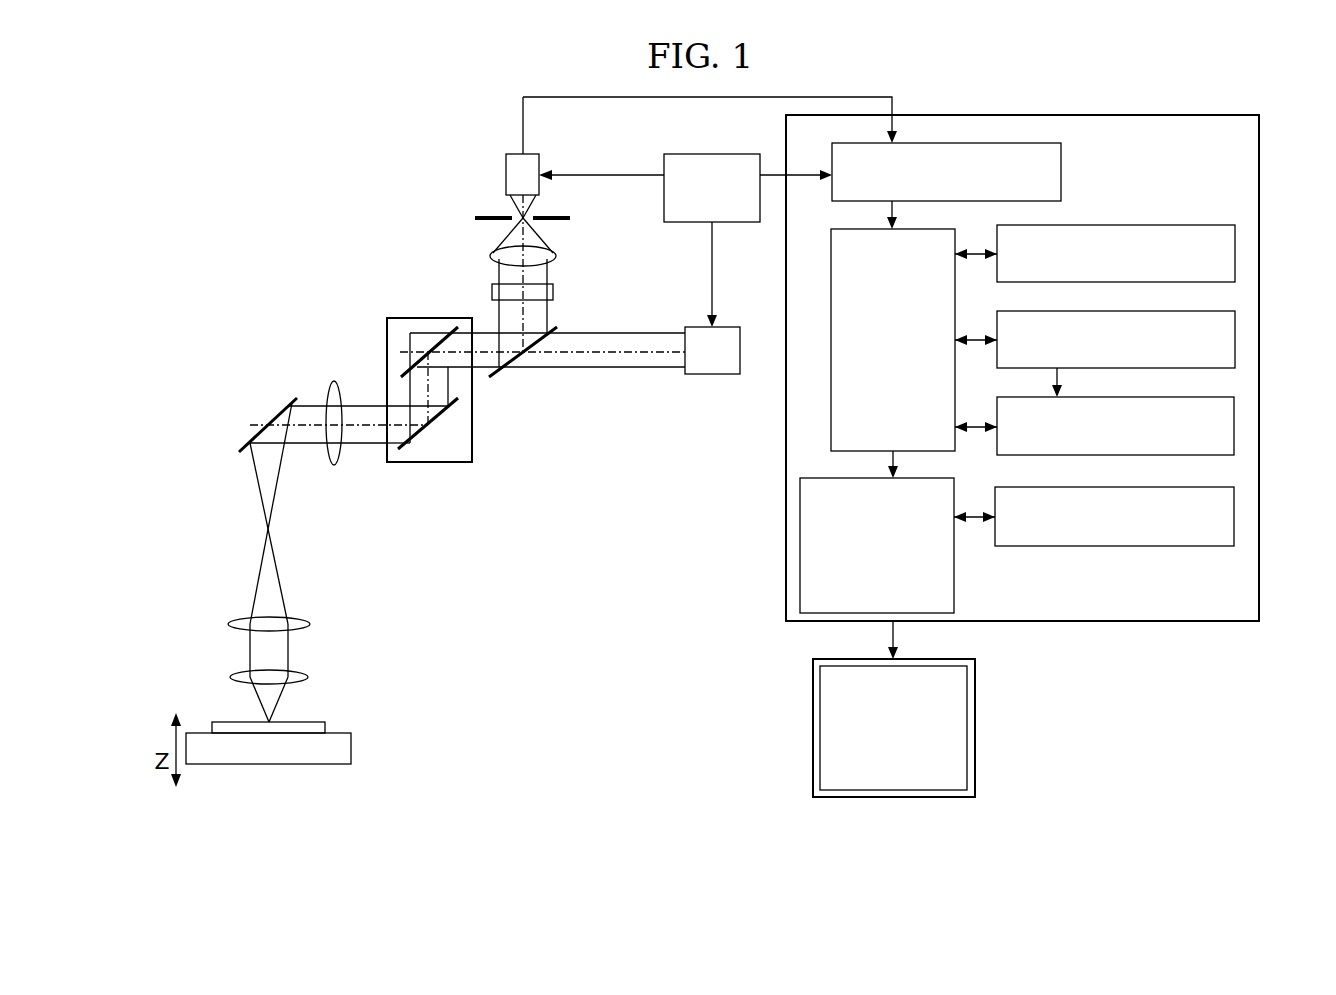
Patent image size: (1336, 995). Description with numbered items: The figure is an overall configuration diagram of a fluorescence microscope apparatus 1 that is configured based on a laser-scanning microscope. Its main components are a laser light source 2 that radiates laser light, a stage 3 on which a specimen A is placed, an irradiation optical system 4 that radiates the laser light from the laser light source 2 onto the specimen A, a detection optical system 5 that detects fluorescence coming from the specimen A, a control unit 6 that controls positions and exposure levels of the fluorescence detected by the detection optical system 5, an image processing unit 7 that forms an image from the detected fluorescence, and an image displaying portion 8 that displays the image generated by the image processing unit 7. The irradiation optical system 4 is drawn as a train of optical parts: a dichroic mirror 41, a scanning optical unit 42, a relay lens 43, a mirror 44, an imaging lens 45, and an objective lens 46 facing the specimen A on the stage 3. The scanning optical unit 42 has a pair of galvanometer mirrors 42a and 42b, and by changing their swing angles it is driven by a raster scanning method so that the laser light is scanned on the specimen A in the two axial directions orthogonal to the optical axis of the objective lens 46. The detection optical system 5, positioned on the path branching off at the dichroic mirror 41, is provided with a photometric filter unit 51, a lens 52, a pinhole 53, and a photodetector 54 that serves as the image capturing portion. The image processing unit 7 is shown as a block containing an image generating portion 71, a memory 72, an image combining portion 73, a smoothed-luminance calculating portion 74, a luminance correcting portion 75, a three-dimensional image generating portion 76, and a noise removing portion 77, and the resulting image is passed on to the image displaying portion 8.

The fluorescence microscope apparatus 1 is at (358, 134).
The laser light source 2 is at (713, 374).
The stage 3 is at (353, 745).
The irradiation optical system 4 is at (500, 511).
The detection optical system 5 is at (430, 134).
The control unit 6 is at (686, 222).
The image processing unit 7 is at (999, 115).
The image displaying portion 8 is at (813, 727).
The dichroic mirror 41 is at (497, 378).
The scanning optical unit 42 is at (462, 395).
The galvanometer mirror 42a is at (420, 443).
The galvanometer mirror 42b is at (433, 332).
The relay lens 43 is at (333, 380).
The mirror 44 is at (252, 436).
The imaging lens 45 is at (228, 624).
The objective lens 46 is at (230, 677).
The photometric filter unit 51 is at (553, 292).
The lens 52 is at (490, 256).
The pinhole 53 is at (475, 218).
The photodetector 54 is at (506, 175).
The image generating portion 71 is at (1061, 172).
The memory 72 is at (831, 405).
The image combining portion 73 is at (1235, 262).
The smoothed-luminance calculating portion 74 is at (1235, 338).
The luminance correcting portion 75 is at (1234, 413).
The three-dimensional image generating portion 76 is at (800, 517).
The noise removing portion 77 is at (1234, 516).
The specimen A is at (320, 718).